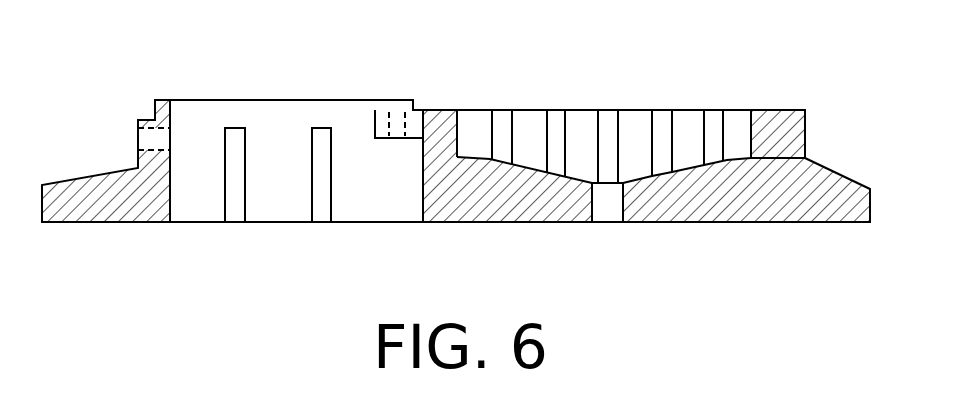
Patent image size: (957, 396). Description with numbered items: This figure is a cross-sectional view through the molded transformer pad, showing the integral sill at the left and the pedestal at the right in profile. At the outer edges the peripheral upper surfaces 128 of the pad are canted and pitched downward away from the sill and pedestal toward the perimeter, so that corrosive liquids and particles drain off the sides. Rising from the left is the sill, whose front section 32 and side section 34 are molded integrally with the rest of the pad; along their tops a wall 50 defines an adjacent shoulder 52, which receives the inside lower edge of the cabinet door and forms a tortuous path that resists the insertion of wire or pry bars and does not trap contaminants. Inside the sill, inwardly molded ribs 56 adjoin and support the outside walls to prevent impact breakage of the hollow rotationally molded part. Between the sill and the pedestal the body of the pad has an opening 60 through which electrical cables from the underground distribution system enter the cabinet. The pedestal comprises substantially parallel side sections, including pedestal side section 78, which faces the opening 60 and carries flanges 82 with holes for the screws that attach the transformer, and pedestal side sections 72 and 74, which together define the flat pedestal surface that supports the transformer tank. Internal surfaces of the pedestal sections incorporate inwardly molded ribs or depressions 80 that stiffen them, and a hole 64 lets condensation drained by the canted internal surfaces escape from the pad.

The peripheral upper surfaces 128 is at (77, 175).
The wall 50 is at (165, 100).
The shoulder 52 is at (145, 120).
The front section 32 is at (173, 122).
The side section 34 is at (278, 120).
The inwardly molded ribs 56 is at (235, 135).
The flanges 82 is at (375, 125).
The opening 60 is at (358, 192).
The pedestal side section 78 is at (457, 135).
The inwardly molded ribs or depressions 80 is at (553, 127).
The pedestal side section 72 is at (687, 128).
The pedestal side section 74 is at (805, 135).
The hole 64 is at (597, 197).